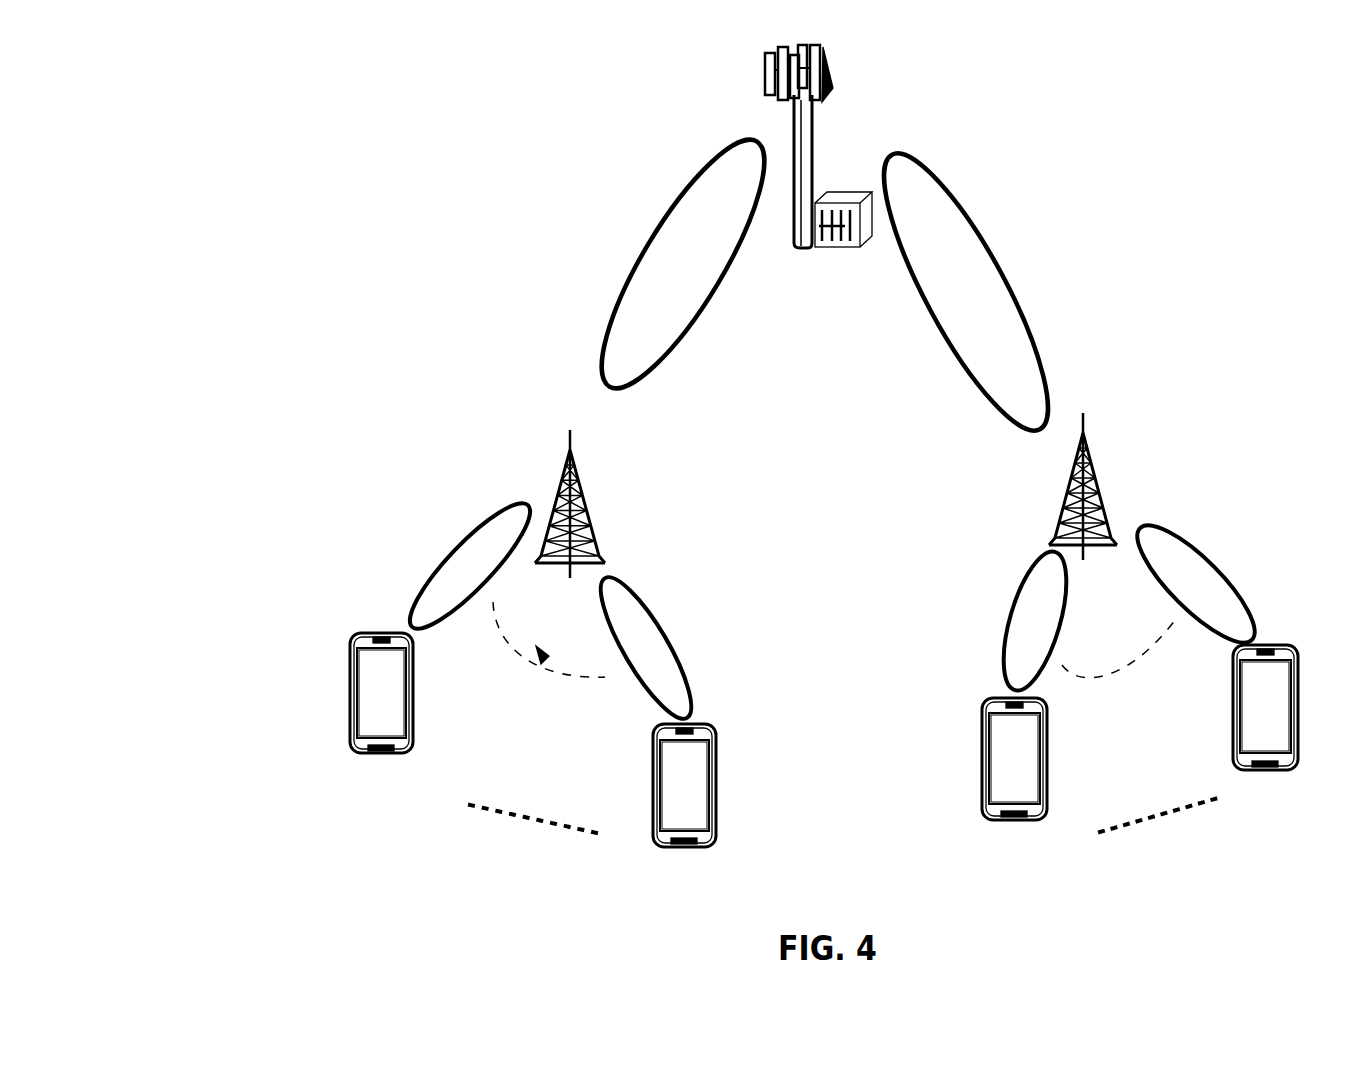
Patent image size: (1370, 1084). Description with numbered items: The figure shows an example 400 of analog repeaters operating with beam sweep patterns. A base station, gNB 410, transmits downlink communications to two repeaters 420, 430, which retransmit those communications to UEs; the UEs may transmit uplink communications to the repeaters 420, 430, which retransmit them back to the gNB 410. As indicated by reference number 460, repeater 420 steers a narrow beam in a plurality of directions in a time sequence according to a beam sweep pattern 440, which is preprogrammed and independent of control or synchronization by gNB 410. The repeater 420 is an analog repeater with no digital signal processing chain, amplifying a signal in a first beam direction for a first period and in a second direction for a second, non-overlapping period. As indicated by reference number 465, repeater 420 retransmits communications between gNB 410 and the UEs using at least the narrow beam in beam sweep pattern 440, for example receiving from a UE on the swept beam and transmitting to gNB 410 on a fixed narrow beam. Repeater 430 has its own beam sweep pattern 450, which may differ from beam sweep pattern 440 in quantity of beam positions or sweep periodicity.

The example 400 is at (248, 72).
The gNB 410 is at (825, 246).
The repeater 420 is at (551, 566).
The repeater 430 is at (1130, 550).
The beam sweep pattern 440 is at (549, 650).
The beam sweep pattern 450 is at (1120, 659).
The steering narrow beam according to beam sweep pattern 460 is at (308, 472).
The retransmitting communications using narrow beam 465 is at (788, 455).